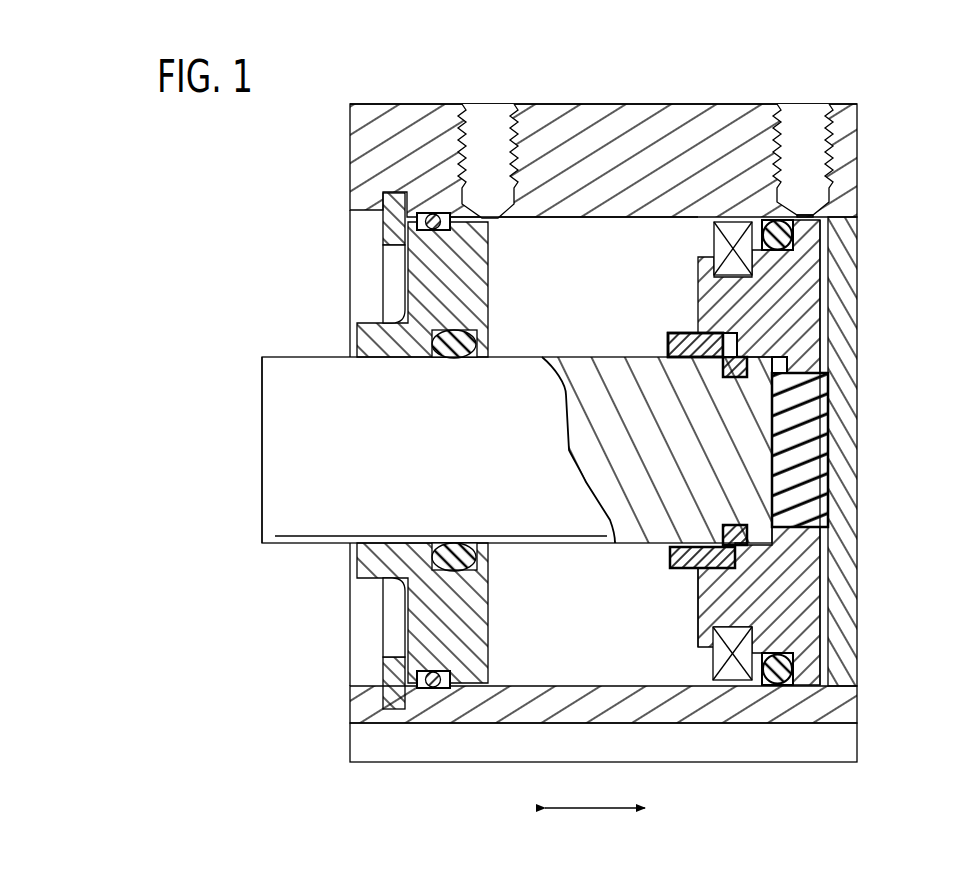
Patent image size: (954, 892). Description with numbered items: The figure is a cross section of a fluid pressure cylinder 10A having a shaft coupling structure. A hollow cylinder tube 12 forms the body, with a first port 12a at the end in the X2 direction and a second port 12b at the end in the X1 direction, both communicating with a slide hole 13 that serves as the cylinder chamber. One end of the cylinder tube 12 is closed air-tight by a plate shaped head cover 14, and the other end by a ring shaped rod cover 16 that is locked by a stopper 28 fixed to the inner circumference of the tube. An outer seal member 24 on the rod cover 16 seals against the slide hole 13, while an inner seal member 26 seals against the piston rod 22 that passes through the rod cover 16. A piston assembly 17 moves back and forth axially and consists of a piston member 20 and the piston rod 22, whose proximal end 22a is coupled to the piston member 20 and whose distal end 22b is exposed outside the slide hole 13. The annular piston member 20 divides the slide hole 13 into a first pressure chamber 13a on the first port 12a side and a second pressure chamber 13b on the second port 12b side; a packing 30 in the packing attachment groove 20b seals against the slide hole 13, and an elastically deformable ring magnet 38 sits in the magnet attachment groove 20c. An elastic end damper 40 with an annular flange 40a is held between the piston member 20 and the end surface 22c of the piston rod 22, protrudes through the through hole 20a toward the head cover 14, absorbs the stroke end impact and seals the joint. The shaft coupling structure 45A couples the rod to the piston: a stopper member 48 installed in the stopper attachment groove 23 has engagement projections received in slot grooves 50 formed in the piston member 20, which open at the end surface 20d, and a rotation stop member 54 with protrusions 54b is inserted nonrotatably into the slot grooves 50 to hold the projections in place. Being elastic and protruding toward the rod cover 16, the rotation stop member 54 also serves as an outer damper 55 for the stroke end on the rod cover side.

The fluid pressure cylinder 10A is at (230, 138).
The cylinder tube 12 is at (656, 103).
The first port 12a is at (803, 118).
The second port 12b is at (478, 118).
The slide hole 13 is at (592, 222).
The first pressure chamber 13a is at (814, 210).
The second pressure chamber 13b is at (545, 238).
The head cover 14 is at (860, 267).
The rod cover 16 is at (403, 280).
The piston assembly 17 is at (586, 355).
The piston member 20 is at (823, 598).
The through hole 20a is at (790, 504).
The packing attachment groove 20b is at (773, 687).
The magnet attachment groove 20c is at (733, 628).
The end surface 20d is at (697, 623).
The piston rod 22 is at (526, 355).
The proximal end 22a is at (762, 412).
The distal end 22b is at (262, 428).
The end surface 22c is at (778, 469).
The stopper attachment groove 23 is at (748, 541).
The outer seal member 24 is at (405, 220).
The inner seal member 26 is at (452, 360).
The stopper 28 is at (398, 672).
The packing 30 is at (778, 235).
The magnet 38 is at (717, 247).
The end damper 40 is at (832, 447).
The annular flange 40a is at (787, 355).
The shaft coupling structure 45A is at (685, 582).
The stopper member 48 is at (750, 371).
The slot grooves 50 is at (707, 560).
The rotation stop member 54 is at (679, 331).
The protrusions 54b is at (722, 350).
The outer damper 55 is at (695, 345).